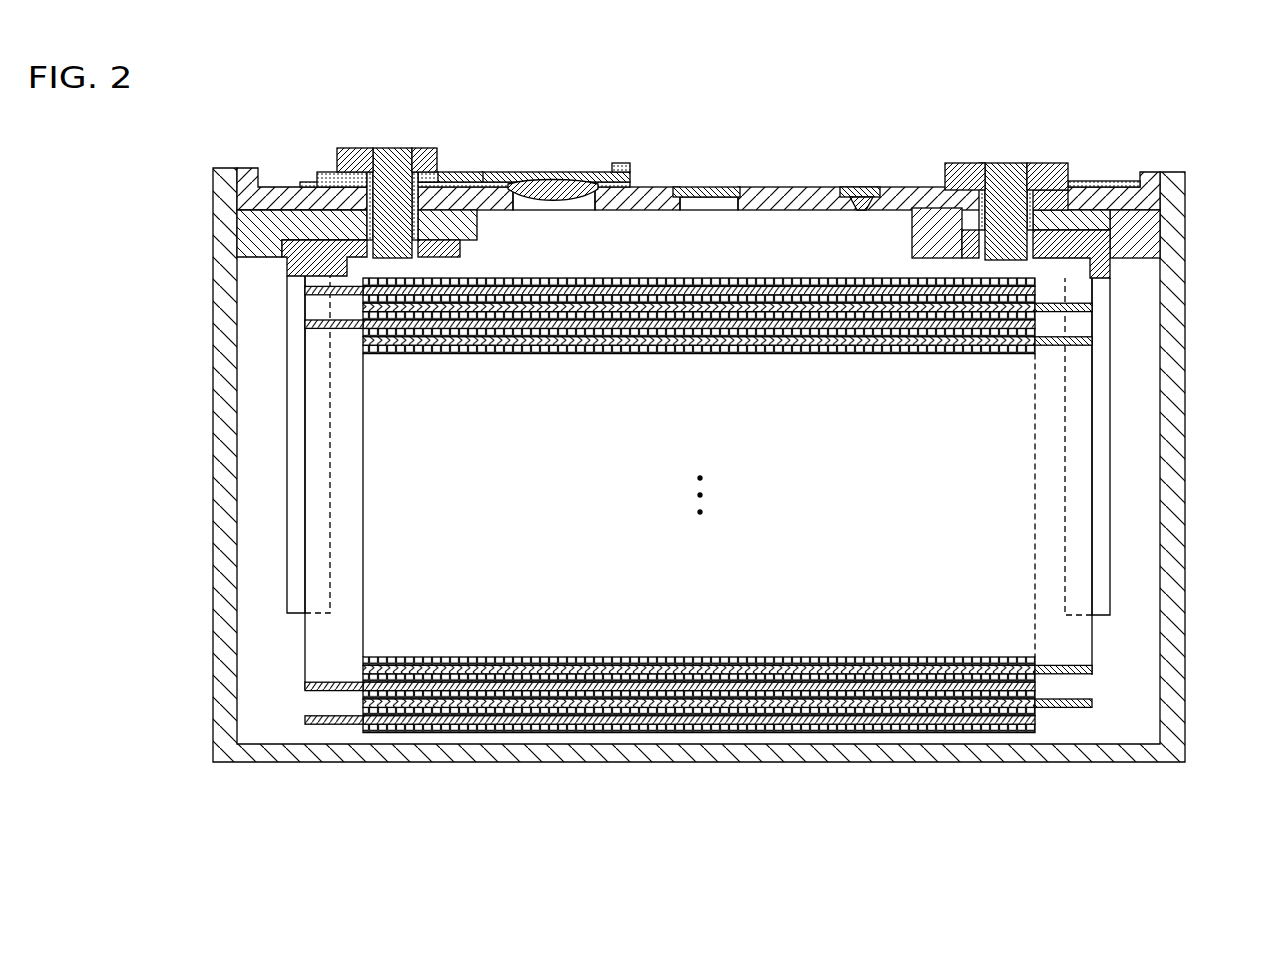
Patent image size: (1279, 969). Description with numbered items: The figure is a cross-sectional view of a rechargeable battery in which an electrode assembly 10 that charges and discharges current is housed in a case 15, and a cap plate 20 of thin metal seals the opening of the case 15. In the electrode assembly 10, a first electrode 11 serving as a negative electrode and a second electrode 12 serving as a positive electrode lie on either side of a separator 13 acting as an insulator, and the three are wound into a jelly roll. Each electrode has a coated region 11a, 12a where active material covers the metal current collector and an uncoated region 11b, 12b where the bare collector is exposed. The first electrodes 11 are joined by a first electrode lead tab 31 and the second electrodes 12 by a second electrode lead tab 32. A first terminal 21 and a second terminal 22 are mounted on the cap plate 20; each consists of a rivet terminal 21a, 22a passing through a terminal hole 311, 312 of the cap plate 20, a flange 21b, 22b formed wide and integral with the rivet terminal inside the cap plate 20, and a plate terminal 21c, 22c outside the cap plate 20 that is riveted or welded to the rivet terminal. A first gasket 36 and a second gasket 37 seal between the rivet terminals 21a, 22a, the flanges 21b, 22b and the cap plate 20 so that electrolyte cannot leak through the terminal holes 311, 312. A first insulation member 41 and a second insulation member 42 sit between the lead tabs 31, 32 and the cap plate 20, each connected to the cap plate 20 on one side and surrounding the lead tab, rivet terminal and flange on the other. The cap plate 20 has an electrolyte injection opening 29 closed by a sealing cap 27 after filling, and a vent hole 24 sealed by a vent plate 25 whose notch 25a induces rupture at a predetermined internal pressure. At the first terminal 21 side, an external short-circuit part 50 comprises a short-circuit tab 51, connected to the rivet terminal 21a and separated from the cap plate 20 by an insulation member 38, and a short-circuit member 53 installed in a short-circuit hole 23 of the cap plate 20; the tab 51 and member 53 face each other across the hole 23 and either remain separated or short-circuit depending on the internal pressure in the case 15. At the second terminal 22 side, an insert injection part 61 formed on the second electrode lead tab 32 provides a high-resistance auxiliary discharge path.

The electrode assembly 10 is at (702, 570).
The first electrode 11 is at (670, 572).
The coated region 11a is at (462, 724).
The uncoated region 11b is at (334, 554).
The second electrode 12 is at (731, 583).
The coated region 12a is at (952, 708).
The uncoated region 12b is at (1066, 565).
The separator 13 is at (637, 677).
The case 15 is at (1186, 470).
The cap plate 20 is at (796, 198).
The first terminal 21 is at (394, 157).
The rivet terminal 21a is at (390, 258).
The flange 21b is at (456, 172).
The plate terminal 21c is at (423, 148).
The second terminal 22 is at (1016, 164).
The rivet terminal 22a is at (1005, 260).
The flange 22b is at (930, 208).
The plate terminal 22c is at (1075, 188).
The short-circuit hole 23 is at (591, 211).
The vent hole 24 is at (709, 211).
The vent plate 25 is at (712, 156).
The notch 25a is at (692, 187).
The sealing cap 27 is at (858, 187).
The electrolyte injection opening 29 is at (860, 211).
The first electrode lead tab 31 is at (276, 405).
The second electrode lead tab 32 is at (1125, 583).
The first gasket 36 is at (305, 182).
The second gasket 37 is at (968, 163).
The insulation member 38 is at (620, 163).
The first insulation member 41 is at (262, 232).
The second insulation member 42 is at (1160, 241).
The external short-circuit part 50 is at (559, 170).
The short-circuit tab 51 is at (505, 172).
The short-circuit member 53 is at (548, 203).
The insert injection part 61 is at (1112, 206).
The terminal hole 311 is at (345, 172).
The terminal hole 312 is at (1050, 163).